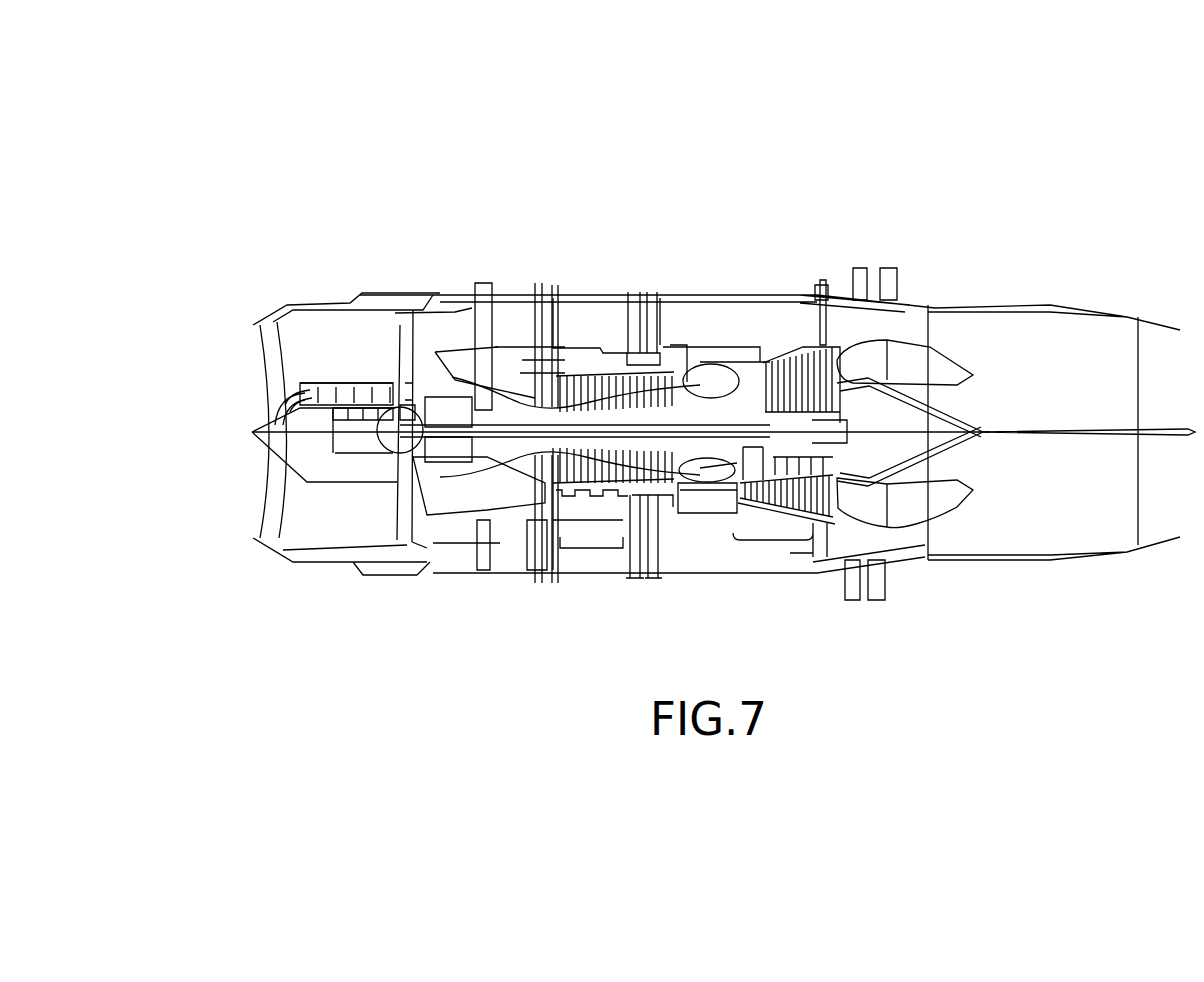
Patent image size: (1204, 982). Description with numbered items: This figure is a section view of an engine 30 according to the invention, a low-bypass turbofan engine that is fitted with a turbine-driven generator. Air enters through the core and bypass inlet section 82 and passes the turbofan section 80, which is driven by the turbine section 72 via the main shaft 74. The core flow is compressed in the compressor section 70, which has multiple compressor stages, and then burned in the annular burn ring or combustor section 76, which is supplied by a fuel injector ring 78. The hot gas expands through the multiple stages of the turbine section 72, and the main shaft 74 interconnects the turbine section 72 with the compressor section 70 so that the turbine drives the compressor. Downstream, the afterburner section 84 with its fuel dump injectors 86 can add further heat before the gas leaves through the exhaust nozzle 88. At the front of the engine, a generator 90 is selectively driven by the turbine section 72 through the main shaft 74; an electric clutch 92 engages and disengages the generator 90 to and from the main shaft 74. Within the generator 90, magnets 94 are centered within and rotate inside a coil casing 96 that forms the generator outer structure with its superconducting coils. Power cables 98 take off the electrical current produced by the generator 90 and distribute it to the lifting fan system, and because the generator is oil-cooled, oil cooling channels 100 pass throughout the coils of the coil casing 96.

The engine 30 is at (699, 172).
The compressor section 70 is at (619, 542).
The turbine section 72 is at (777, 547).
The main shaft 74 is at (702, 427).
The combustor section 76 is at (738, 515).
The fuel injector ring 78 is at (728, 368).
The turbofan section 80 is at (423, 599).
The core and bypass inlet section 82 is at (547, 599).
The afterburner section 84 is at (929, 620).
The fuel dump injectors 86 is at (878, 252).
The exhaust nozzle 88 is at (1172, 585).
The generator 90 is at (388, 375).
The electric clutch 92 is at (418, 415).
The magnets 94 is at (357, 413).
The coil casing 96 is at (337, 390).
The power cables 98 is at (282, 412).
The oil cooling channels 100 is at (330, 392).